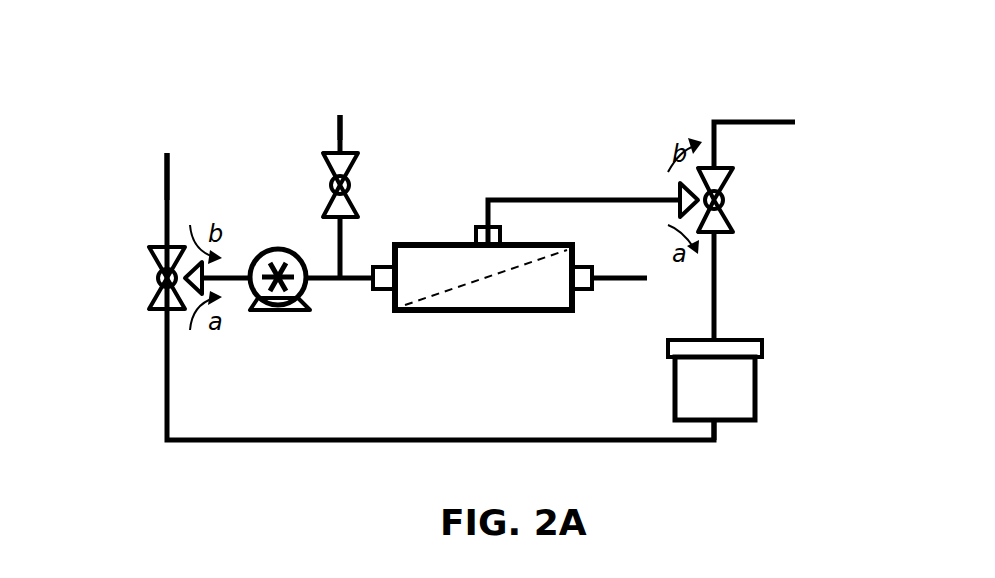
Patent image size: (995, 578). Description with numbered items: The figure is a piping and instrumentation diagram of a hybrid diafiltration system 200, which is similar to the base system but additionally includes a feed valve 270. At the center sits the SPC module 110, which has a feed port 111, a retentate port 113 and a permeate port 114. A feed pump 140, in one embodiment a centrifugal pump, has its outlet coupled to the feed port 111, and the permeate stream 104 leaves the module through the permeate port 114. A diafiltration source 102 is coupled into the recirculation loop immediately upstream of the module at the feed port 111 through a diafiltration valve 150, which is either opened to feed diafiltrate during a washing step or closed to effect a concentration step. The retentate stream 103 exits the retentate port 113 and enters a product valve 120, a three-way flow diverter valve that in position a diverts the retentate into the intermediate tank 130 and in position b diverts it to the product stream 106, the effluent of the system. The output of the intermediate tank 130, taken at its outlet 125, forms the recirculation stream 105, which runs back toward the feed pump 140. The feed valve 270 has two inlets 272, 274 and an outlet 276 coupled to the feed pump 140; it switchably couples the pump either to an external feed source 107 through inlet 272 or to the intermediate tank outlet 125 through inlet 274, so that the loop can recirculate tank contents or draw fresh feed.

The hybrid diafiltration system 200 is at (203, 72).
The diafiltration source 102 is at (345, 135).
The retentate stream 103 is at (505, 197).
The permeate stream 104 is at (617, 282).
The recirculation stream 105 is at (515, 442).
The product stream 106 is at (716, 135).
The feed source 107 is at (167, 150).
The SPC module 110 is at (482, 273).
The feed port 111 is at (383, 290).
The retentate port 113 is at (478, 228).
The permeate port 114 is at (582, 266).
The product valve 120 is at (729, 218).
The intermediate tank outlet 125 is at (716, 421).
The intermediate tank 130 is at (715, 380).
The feed pump 140 is at (274, 246).
The diafiltration valve 150 is at (337, 150).
The feed valve 270 is at (157, 279).
The feed valve inlet 272 is at (163, 243).
The feed valve inlet 274 is at (160, 312).
The feed valve outlet 276 is at (207, 282).